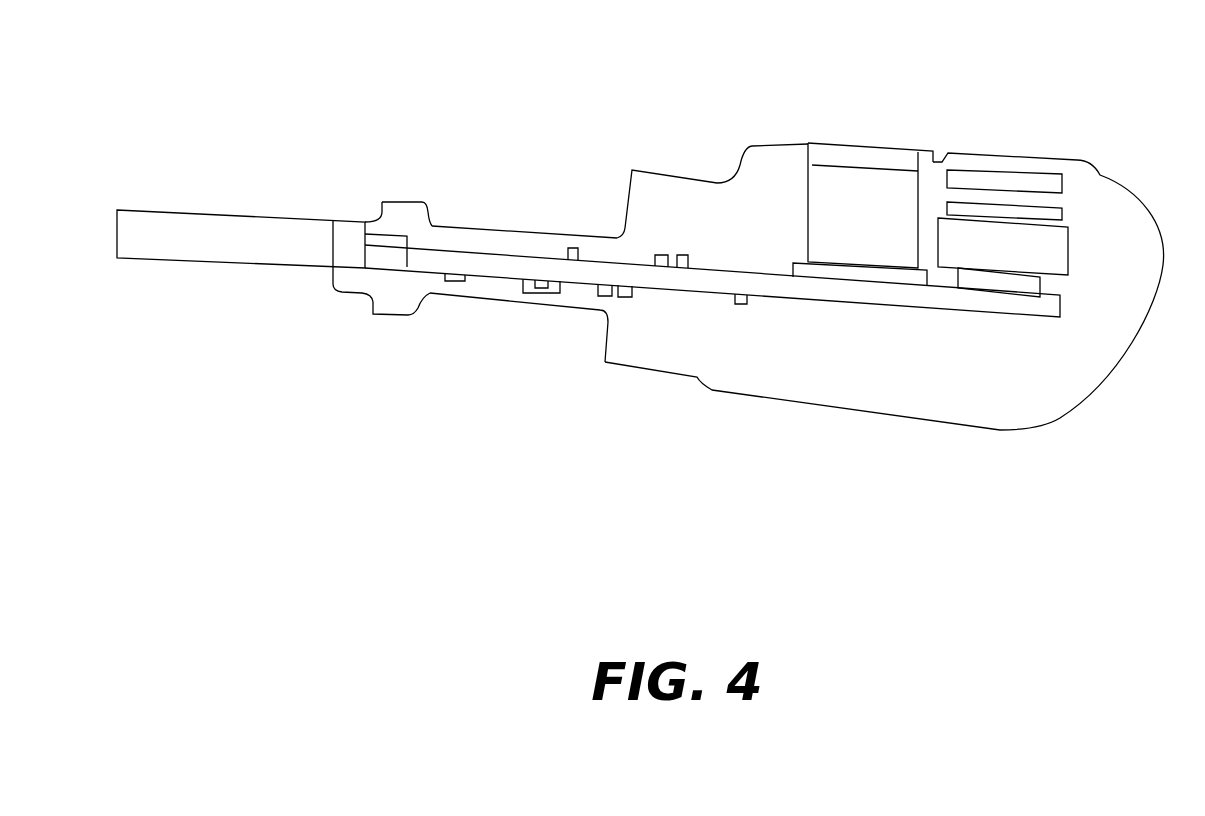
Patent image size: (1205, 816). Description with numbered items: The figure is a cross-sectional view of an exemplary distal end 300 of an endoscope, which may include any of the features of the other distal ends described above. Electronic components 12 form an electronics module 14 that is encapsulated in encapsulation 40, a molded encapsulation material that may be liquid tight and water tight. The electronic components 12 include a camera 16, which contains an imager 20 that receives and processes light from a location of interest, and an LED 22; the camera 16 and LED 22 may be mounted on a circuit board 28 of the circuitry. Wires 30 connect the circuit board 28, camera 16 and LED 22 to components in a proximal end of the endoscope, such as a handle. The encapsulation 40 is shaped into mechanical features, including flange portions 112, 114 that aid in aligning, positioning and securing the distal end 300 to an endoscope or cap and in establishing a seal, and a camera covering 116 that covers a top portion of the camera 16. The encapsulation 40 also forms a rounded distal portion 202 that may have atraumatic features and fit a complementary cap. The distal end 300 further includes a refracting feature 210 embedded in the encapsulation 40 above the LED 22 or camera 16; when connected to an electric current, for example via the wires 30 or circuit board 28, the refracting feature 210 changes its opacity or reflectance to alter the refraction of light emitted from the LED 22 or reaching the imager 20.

The distal end 300 is at (180, 138).
The wires 30 is at (385, 233).
The flange portion 114 is at (413, 202).
The camera covering 116 is at (526, 184).
The flange portion 112 is at (695, 181).
The camera 16 is at (808, 233).
The electronic components 12 is at (949, 113).
The refracting feature 210 is at (1008, 167).
The LED 22 is at (1068, 237).
The rounded distal portion 202 is at (1125, 341).
The electronics module 14 is at (925, 338).
The encapsulation 40 is at (872, 415).
The imager 20 is at (822, 280).
The circuit board 28 is at (777, 297).